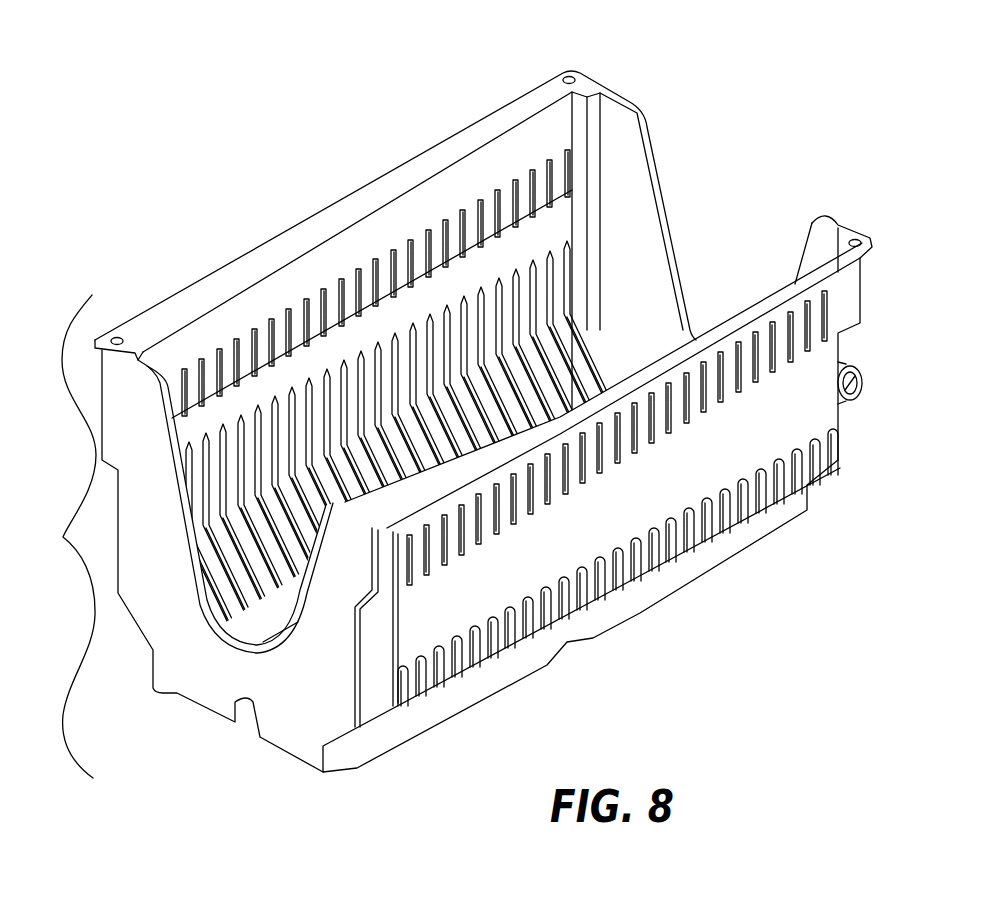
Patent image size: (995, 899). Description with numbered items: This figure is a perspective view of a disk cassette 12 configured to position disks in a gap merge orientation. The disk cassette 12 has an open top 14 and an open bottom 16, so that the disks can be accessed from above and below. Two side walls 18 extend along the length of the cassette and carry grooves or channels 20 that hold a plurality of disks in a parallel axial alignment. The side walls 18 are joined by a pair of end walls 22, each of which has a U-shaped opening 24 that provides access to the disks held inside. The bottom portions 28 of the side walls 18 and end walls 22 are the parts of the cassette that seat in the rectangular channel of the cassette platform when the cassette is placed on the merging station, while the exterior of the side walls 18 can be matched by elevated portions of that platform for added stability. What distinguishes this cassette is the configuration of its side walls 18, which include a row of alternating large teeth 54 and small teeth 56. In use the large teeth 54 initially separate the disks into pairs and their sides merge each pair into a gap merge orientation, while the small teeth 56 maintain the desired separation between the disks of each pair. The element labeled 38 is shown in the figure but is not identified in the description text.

The disk cassette 12 is at (59, 536).
The open top 14 is at (657, 94).
The open bottom 16 is at (312, 786).
The side wall 18 is at (422, 172).
The grooves or channels 20 is at (360, 343).
The end wall 22 is at (207, 663).
The U-shaped opening 24 is at (705, 283).
The bottom portion 28 is at (728, 545).
The support surface 38 is at (132, 620).
The large teeth 54 is at (232, 395).
The small teeth 56 is at (300, 380).